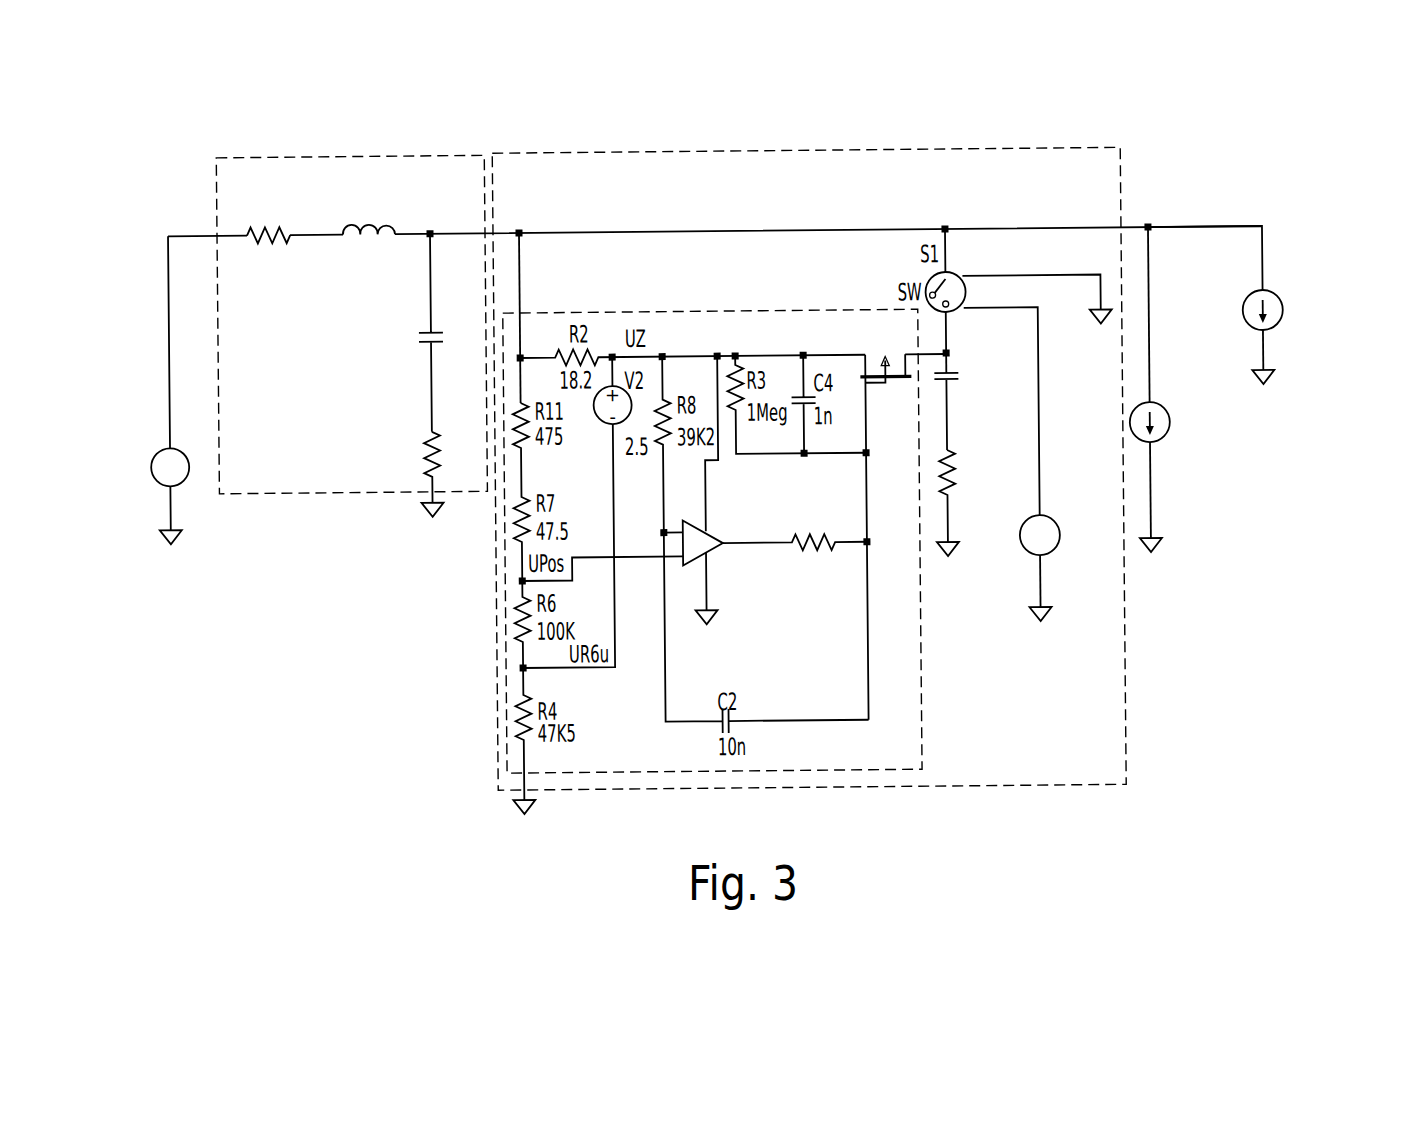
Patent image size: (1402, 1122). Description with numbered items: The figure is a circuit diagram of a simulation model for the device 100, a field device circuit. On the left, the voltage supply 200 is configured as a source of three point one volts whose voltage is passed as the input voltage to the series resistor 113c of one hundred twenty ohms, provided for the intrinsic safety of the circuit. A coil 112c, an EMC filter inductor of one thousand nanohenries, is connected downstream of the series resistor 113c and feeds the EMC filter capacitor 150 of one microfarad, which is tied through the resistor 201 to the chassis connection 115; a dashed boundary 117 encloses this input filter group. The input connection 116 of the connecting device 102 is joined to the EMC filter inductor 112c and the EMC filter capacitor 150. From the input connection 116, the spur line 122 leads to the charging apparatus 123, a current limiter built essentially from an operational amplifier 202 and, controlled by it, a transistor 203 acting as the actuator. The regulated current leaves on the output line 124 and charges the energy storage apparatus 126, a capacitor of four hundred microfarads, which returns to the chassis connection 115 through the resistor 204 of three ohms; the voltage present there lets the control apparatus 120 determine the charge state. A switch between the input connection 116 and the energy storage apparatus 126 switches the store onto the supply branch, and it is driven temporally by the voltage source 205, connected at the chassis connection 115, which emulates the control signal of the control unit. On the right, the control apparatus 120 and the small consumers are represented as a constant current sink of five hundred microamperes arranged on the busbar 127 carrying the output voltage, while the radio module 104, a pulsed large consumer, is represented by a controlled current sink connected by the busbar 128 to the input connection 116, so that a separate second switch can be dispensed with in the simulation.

The device 100 is at (1092, 114).
The connecting device 102 is at (588, 153).
The radio module 104 is at (1170, 428).
The coil 112c is at (388, 212).
The series resistor 113c is at (283, 210).
The chassis connection 115 is at (434, 524).
The input connection 116 is at (636, 233).
The input filter network 117 is at (240, 155).
The control apparatus 120 is at (1283, 320).
The spur line 122 is at (521, 263).
The charging apparatus 123 is at (720, 313).
The output line 124 is at (923, 358).
The energy storage apparatus 126 is at (960, 377).
The busbar 127 is at (1180, 233).
The busbar 128 is at (1150, 282).
The EMC filter capacitor 150 is at (425, 349).
The voltage supply 200 is at (187, 465).
The resistor 201 is at (430, 432).
The operational amplifier 202 is at (720, 537).
The transistor 203 is at (885, 389).
The resistor 204 is at (948, 444).
The voltage source 205 is at (1057, 548).